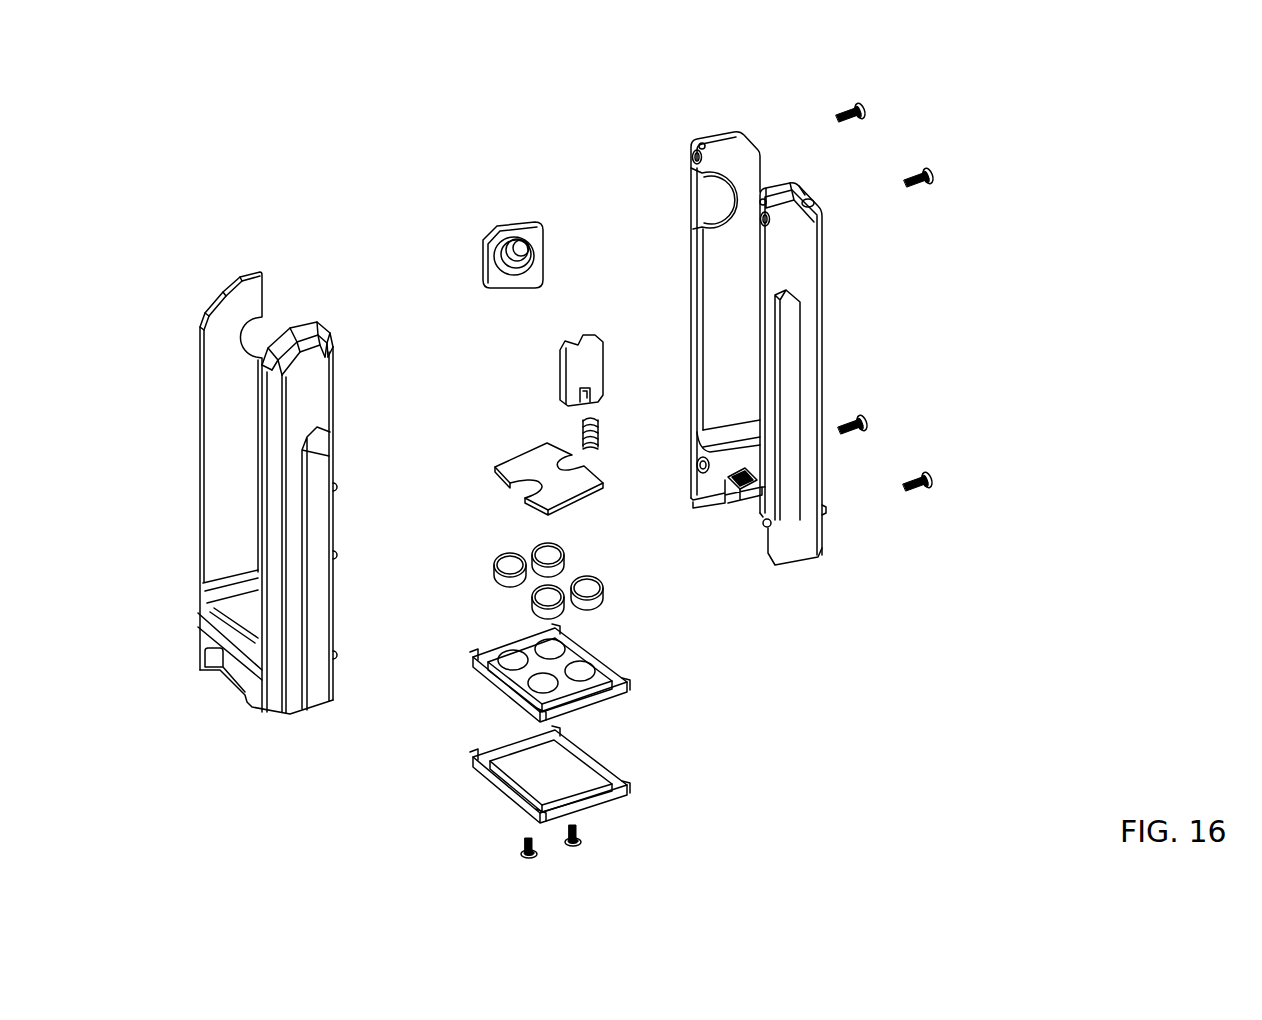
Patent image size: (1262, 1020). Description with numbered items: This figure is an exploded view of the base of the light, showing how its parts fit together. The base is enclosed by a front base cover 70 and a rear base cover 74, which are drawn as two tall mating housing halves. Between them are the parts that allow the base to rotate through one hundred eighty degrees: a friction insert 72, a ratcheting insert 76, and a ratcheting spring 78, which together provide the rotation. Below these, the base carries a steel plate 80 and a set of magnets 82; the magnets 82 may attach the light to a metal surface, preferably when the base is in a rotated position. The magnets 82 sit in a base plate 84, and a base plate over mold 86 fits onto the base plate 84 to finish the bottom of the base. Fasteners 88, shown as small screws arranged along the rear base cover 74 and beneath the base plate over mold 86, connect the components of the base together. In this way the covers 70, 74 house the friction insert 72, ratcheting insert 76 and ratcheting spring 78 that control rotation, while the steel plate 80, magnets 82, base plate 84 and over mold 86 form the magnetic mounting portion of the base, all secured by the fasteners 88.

The front base cover 70 is at (245, 266).
The friction insert 72 is at (508, 222).
The rear base cover 74 is at (711, 139).
The ratcheting insert 76 is at (564, 350).
The ratcheting spring 78 is at (598, 432).
The steel plate 80 is at (497, 462).
The magnets 82 is at (600, 595).
The base plate 84 is at (470, 664).
The base plate over mold 86 is at (588, 741).
The fasteners 88 is at (852, 105).